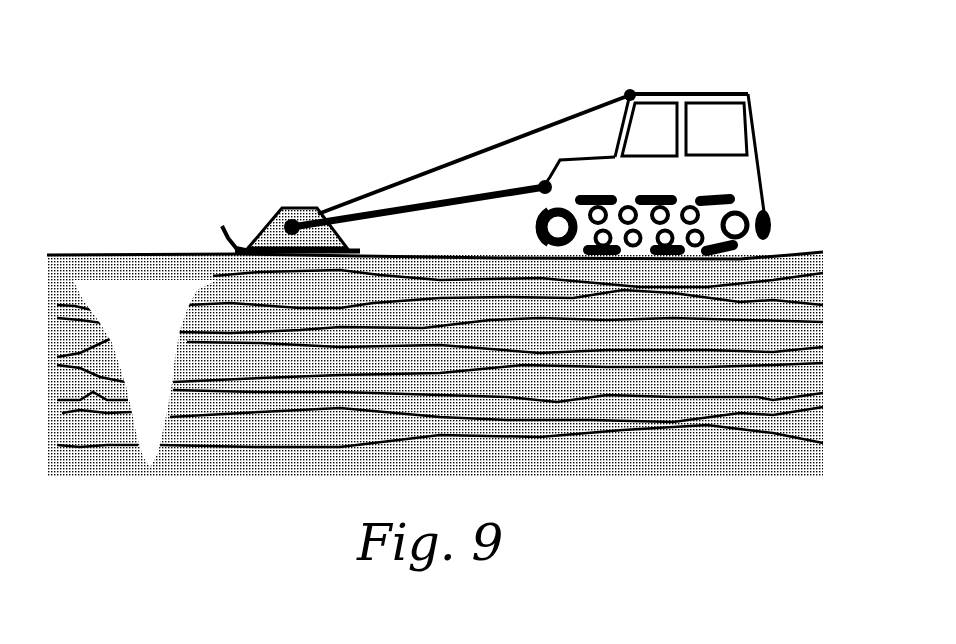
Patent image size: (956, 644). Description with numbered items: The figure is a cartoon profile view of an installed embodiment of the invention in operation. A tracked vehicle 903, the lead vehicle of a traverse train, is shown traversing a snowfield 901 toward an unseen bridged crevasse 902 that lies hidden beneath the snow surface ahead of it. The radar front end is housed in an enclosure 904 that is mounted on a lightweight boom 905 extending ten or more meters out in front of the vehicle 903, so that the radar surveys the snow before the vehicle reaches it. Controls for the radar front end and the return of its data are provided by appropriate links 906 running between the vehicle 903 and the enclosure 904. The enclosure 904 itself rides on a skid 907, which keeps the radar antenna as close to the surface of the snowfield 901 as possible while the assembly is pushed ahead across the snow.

The snowfield 901 is at (817, 275).
The bridged crevasse 902 is at (152, 312).
The tracked vehicle 903 is at (758, 150).
The enclosure 904 is at (293, 205).
The lightweight boom 905 is at (455, 197).
The links 906 is at (550, 122).
The skid 907 is at (222, 226).